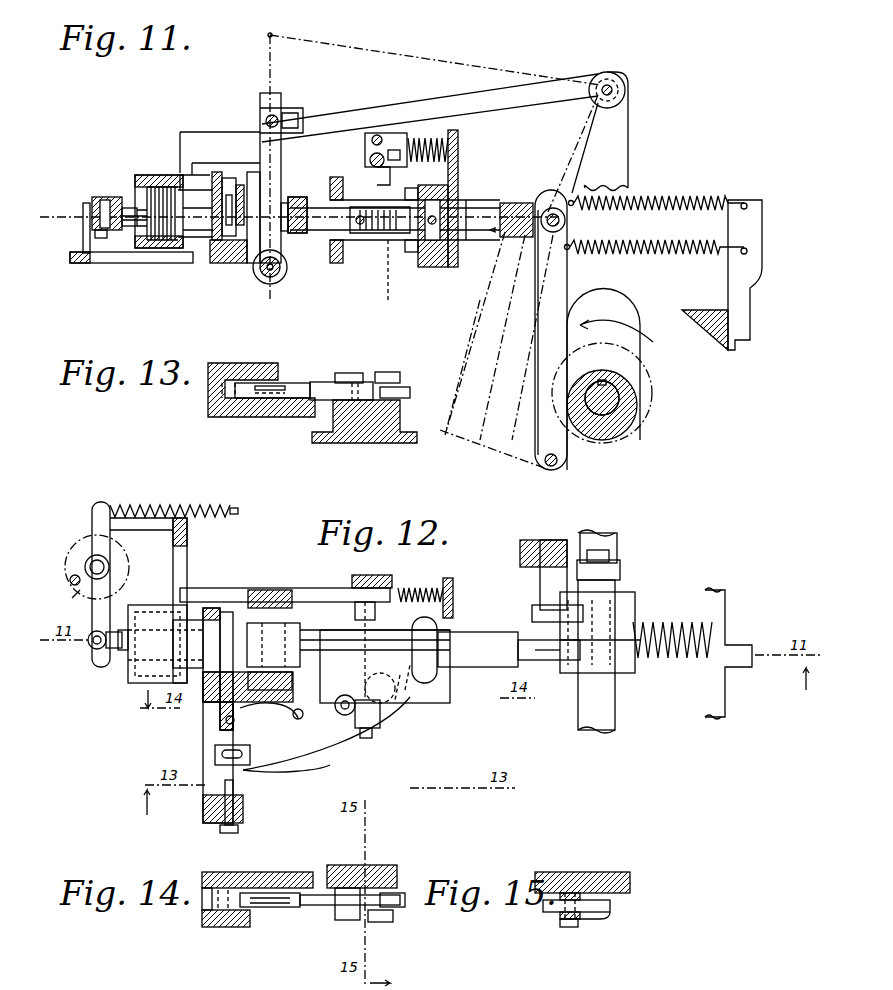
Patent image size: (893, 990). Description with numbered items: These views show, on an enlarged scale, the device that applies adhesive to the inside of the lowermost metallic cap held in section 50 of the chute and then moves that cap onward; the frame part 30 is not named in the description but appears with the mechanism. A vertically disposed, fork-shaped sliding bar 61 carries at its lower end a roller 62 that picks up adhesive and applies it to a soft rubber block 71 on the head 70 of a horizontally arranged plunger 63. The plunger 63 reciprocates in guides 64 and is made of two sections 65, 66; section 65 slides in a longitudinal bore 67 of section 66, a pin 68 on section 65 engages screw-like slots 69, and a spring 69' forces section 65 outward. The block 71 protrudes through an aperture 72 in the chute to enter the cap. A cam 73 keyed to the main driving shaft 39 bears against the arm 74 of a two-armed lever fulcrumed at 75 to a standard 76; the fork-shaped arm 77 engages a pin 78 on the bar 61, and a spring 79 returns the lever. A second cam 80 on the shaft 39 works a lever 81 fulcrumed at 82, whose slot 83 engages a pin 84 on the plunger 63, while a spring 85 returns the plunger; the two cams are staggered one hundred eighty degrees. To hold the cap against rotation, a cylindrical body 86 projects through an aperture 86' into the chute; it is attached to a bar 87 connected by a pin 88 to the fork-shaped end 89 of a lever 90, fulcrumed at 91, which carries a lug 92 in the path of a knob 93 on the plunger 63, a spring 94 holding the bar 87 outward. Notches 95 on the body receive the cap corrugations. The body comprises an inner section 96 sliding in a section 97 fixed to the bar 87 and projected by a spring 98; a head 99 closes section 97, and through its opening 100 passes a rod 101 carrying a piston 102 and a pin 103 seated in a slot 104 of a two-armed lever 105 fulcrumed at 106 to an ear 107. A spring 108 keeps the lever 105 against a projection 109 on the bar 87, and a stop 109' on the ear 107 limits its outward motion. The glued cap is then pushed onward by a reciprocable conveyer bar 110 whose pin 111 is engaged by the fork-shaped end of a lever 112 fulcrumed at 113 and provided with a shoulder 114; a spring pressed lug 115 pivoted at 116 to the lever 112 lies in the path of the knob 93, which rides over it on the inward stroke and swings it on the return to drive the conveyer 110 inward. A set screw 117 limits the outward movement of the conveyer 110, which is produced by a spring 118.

In FIG. 11, the frame plate 30 is at (460, 150).
In FIG. 12, the frame plate 30 is at (455, 603).
In FIG. 11, the main driving shaft 39 is at (618, 395).
In FIG. 12, the main driving shaft 39 is at (610, 703).
In FIG. 11, the section of the chute 50 is at (240, 185).
In FIG. 11, the sliding bar 61 is at (262, 250).
In FIG. 12, the sliding bar 61 is at (275, 592).
In FIG. 11, the roller 62 is at (272, 285).
In FIG. 12, the roller 62 is at (241, 723).
In FIG. 11, the plunger 63 is at (480, 242).
In FIG. 11, the guides 64 is at (455, 196).
In FIG. 11, the section of plunger 65 is at (314, 200).
In FIG. 11, the section of plunger 66 is at (515, 202).
In FIG. 12, the section of plunger 66 is at (482, 632).
In FIG. 11, the longitudinal bore 67 is at (395, 235).
In FIG. 11, the pin 68 is at (365, 238).
In FIG. 11, the screw-like slots 69 is at (401, 241).
In FIG. 11, the spring 69' is at (401, 281).
In FIG. 11, the head 70 is at (296, 197).
In FIG. 11, the soft block 71 is at (286, 233).
In FIG. 12, the soft block 71 is at (290, 630).
In FIG. 11, the aperture 72 is at (250, 255).
In FIG. 12, the aperture 72 is at (240, 612).
In FIG. 11, the cam 73 is at (628, 305).
In FIG. 12, the cam 73 is at (635, 668).
In FIG. 11, the arm 74 is at (588, 146).
In FIG. 11, the fulcrum 75 is at (624, 84).
In FIG. 12, the fulcrum 75 is at (612, 558).
In FIG. 11, the standard 76 is at (628, 117).
In FIG. 12, the standard 76 is at (620, 570).
In FIG. 11, the arm 77 is at (348, 105).
In FIG. 12, the arm 77 is at (505, 652).
In FIG. 11, the pin 78 is at (285, 110).
In FIG. 11, the spring 79 is at (690, 196).
In FIG. 12, the spring 79 is at (700, 670).
In FIG. 11, the second cam 80 is at (608, 440).
In FIG. 12, the second cam 80 is at (635, 598).
In FIG. 11, the lever 81 is at (567, 278).
In FIG. 12, the lever 81 is at (532, 612).
In FIG. 11, the fulcrum 82 is at (549, 468).
In FIG. 12, the fulcrum 82 is at (548, 586).
In FIG. 11, the slot 83 is at (552, 208).
In FIG. 11, the pin 84 is at (527, 232).
In FIG. 11, the spring 85 is at (700, 254).
In FIG. 12, the spring 85 is at (672, 632).
In FIG. 11, the cylindrical body 86 is at (181, 164).
In FIG. 12, the cylindrical body 86 is at (235, 687).
In FIG. 11, the aperture 86' is at (213, 268).
In FIG. 12, the aperture 86' is at (202, 716).
In FIG. 11, the bar 87 is at (205, 132).
In FIG. 12, the bar 87 is at (325, 590).
In FIG. 11, the pin 88 is at (378, 135).
In FIG. 11, the fork-shaped end 89 is at (366, 146).
In FIG. 11, the lever 90 is at (370, 160).
In FIG. 12, the lever 90 is at (355, 610).
In FIG. 11, the fulcrum 91 is at (392, 152).
In FIG. 11, the lug 92 is at (392, 180).
In FIG. 11, the knob 93 is at (448, 185).
In FIG. 12, the knob 93 is at (416, 630).
In FIG. 11, the spring 94 is at (445, 138).
In FIG. 12, the spring 94 is at (425, 588).
In FIG. 11, the notches 95 is at (228, 180).
In FIG. 11, the inner section 96 is at (190, 238).
In FIG. 12, the inner section 96 is at (195, 620).
In FIG. 11, the section 97 is at (158, 175).
In FIG. 12, the section 97 is at (155, 605).
In FIG. 11, the spring 98 is at (147, 187).
In FIG. 11, the head 99 is at (102, 200).
In FIG. 11, the opening 100 is at (135, 230).
In FIG. 11, the rod 101 is at (158, 243).
In FIG. 12, the rod 101 is at (122, 650).
In FIG. 11, the piston 102 is at (215, 176).
In FIG. 12, the piston 102 is at (215, 608).
In FIG. 11, the pin 103 is at (92, 200).
In FIG. 12, the pin 103 is at (90, 650).
In FIG. 12, the slot 104 is at (100, 655).
In FIG. 11, the two-armed lever 105 is at (86, 208).
In FIG. 12, the two-armed lever 105 is at (92, 612).
In FIG. 12, the fulcrum 106 is at (90, 560).
In FIG. 11, the ear 107 is at (78, 265).
In FIG. 12, the ear 107 is at (70, 580).
In FIG. 12, the spring 108 is at (163, 505).
In FIG. 12, the projection 109 is at (166, 600).
In FIG. 11, the stop 109' is at (73, 228).
In FIG. 12, the stop 109' is at (60, 595).
In FIG. 13, the reciprocable bar 110 is at (228, 375).
In FIG. 12, the reciprocable bar 110 is at (203, 715).
In FIG. 14, the reciprocable bar 110 is at (228, 880).
In FIG. 12, the pin 111 is at (215, 757).
In FIG. 13, the lever 112 is at (322, 382).
In FIG. 12, the lever 112 is at (300, 760).
In FIG. 14, the lever 112 is at (310, 906).
In FIG. 13, the fulcrum 113 is at (355, 373).
In FIG. 12, the fulcrum 113 is at (343, 695).
In FIG. 14, the fulcrum 113 is at (348, 920).
In FIG. 13, the shoulder 114 is at (357, 430).
In FIG. 12, the shoulder 114 is at (360, 728).
In FIG. 13, the spring pressed lug 115 is at (412, 390).
In FIG. 12, the spring pressed lug 115 is at (425, 705).
In FIG. 14, the spring pressed lug 115 is at (410, 915).
In FIG. 15, the spring pressed lug 115 is at (610, 906).
In FIG. 13, the pivot 116 is at (388, 372).
In FIG. 12, the pivot 116 is at (410, 710).
In FIG. 14, the pivot 116 is at (392, 922).
In FIG. 15, the pivot 116 is at (580, 927).
In FIG. 12, the set screw 117 is at (238, 829).
In FIG. 13, the spring 118 is at (287, 382).
In FIG. 12, the spring 118 is at (262, 708).
In FIG. 14, the spring 118 is at (272, 908).